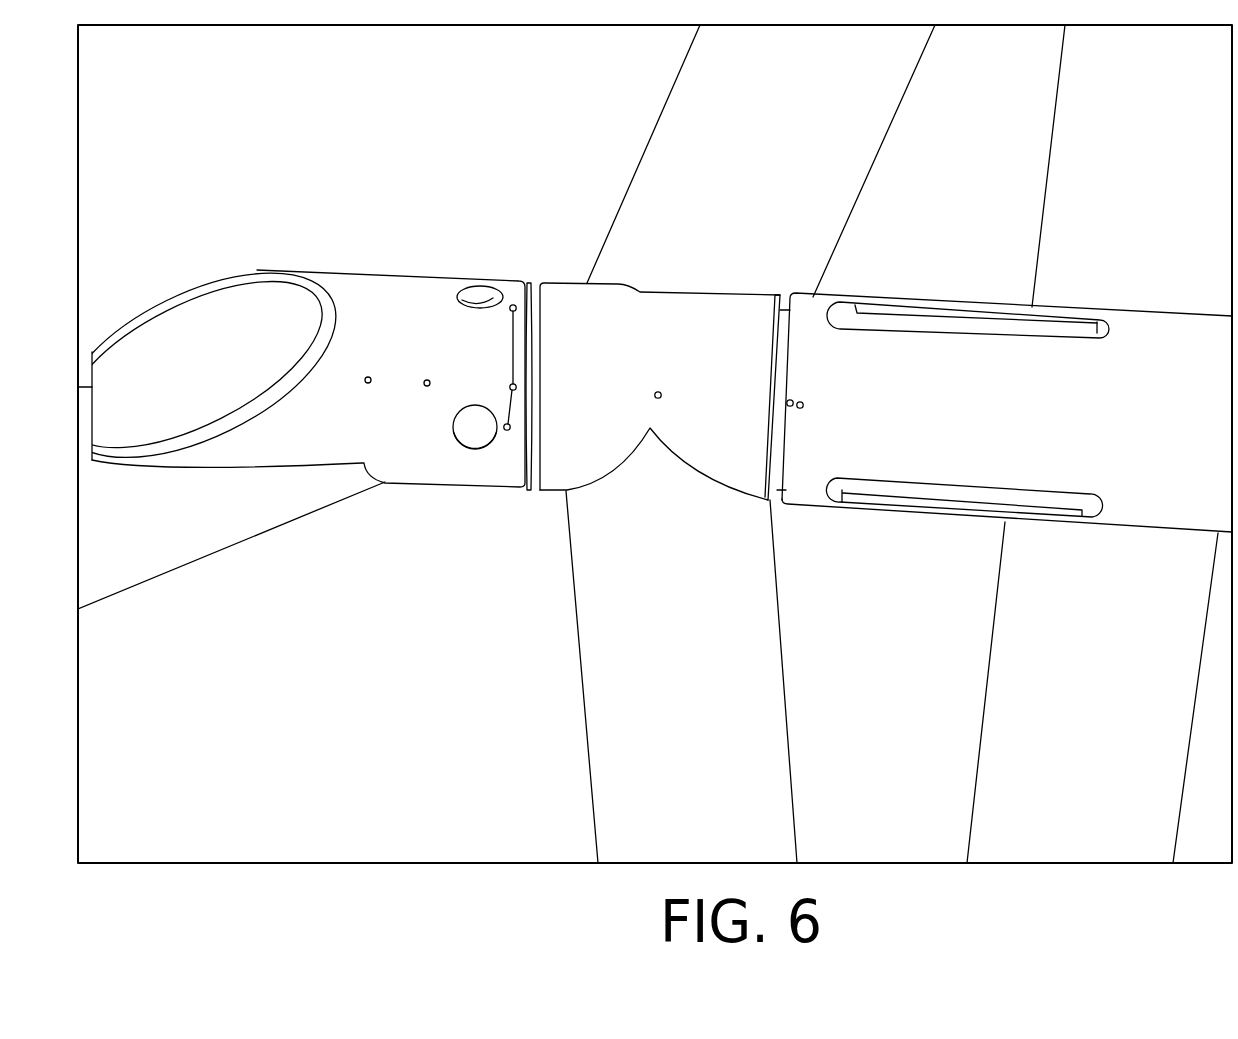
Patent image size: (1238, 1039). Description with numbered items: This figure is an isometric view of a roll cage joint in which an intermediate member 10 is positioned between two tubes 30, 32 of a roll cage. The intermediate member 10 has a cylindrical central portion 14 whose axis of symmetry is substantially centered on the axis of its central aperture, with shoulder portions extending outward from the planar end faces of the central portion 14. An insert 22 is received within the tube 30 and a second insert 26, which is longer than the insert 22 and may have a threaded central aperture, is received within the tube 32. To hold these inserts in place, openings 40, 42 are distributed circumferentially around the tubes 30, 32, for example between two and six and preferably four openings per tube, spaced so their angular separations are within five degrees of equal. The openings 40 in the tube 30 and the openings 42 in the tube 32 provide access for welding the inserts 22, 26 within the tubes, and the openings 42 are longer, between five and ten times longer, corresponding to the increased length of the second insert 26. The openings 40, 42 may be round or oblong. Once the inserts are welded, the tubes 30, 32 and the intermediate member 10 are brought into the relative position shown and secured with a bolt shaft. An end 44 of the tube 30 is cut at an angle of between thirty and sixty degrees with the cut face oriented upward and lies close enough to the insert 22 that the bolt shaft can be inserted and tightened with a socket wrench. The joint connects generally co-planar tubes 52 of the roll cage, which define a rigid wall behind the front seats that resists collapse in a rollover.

The intermediate member 10 is at (568, 276).
The central portion 14 is at (658, 379).
The insert 22 is at (478, 297).
The second insert 26 is at (873, 318).
The tube 30 is at (383, 310).
The tube 32 is at (1142, 320).
The openings 40 is at (497, 292).
The openings 42 is at (933, 312).
The end 44 is at (210, 285).
The tubes 52 is at (655, 187).